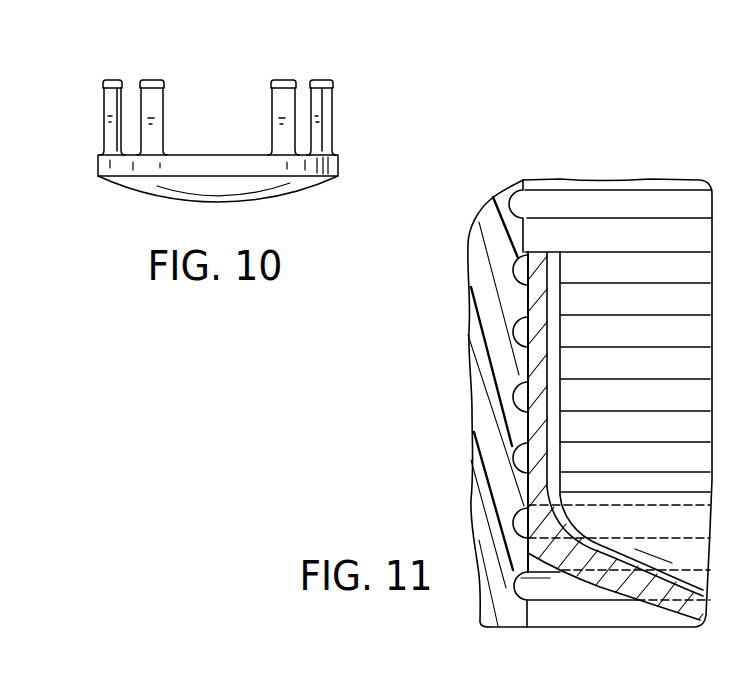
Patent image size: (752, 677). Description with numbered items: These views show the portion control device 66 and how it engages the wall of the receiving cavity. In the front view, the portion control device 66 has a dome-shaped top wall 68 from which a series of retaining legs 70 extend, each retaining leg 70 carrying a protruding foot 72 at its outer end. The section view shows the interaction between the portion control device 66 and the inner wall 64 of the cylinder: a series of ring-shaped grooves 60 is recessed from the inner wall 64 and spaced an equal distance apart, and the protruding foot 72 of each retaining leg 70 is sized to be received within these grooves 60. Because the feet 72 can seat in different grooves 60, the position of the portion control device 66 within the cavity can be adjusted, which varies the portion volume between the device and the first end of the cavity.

In FIG. 11, the ring-shaped grooves 60 is at (525, 398).
In FIG. 11, the inner wall 64 is at (489, 222).
In FIG. 10, the portion control device 66 is at (366, 130).
In FIG. 10, the dome-shaped top wall 68 is at (292, 183).
In FIG. 10, the retaining legs 70 is at (165, 92).
In FIG. 11, the retaining legs 70 is at (538, 369).
In FIG. 10, the protruding foot 72 is at (333, 85).
In FIG. 11, the protruding foot 72 is at (526, 268).